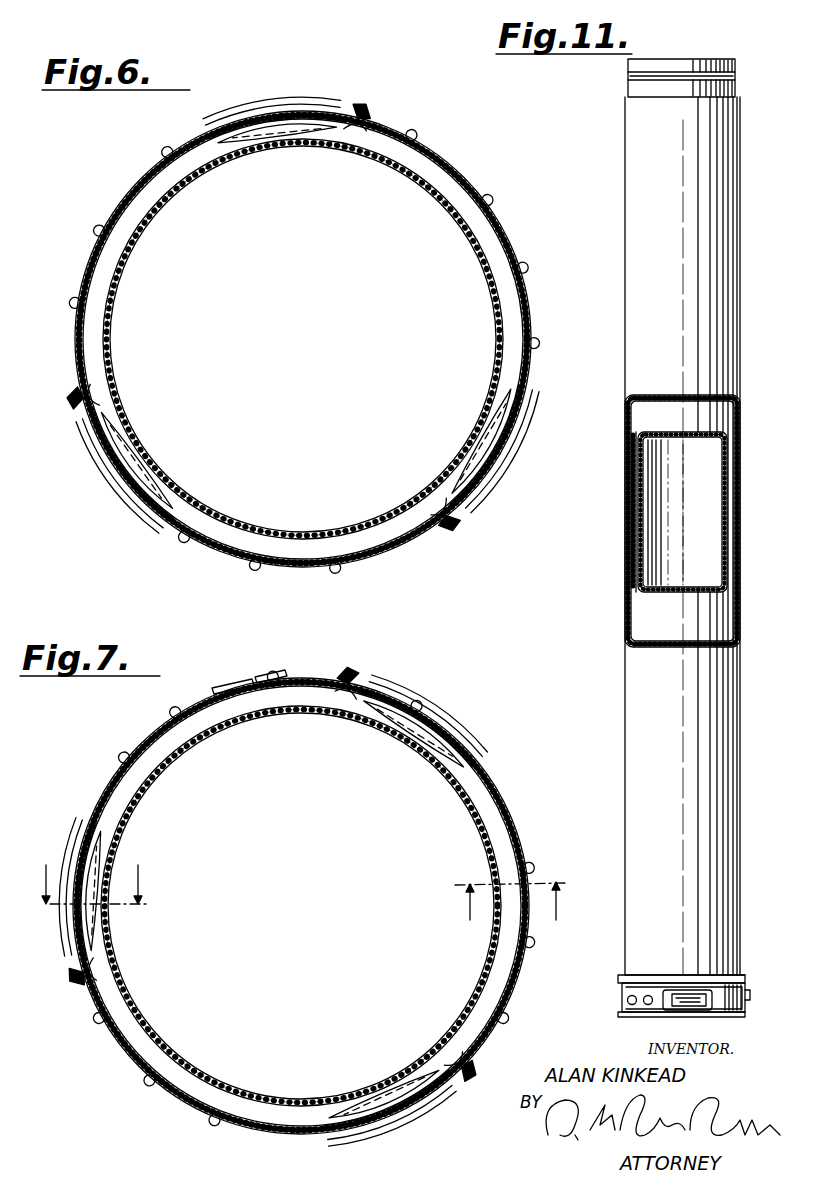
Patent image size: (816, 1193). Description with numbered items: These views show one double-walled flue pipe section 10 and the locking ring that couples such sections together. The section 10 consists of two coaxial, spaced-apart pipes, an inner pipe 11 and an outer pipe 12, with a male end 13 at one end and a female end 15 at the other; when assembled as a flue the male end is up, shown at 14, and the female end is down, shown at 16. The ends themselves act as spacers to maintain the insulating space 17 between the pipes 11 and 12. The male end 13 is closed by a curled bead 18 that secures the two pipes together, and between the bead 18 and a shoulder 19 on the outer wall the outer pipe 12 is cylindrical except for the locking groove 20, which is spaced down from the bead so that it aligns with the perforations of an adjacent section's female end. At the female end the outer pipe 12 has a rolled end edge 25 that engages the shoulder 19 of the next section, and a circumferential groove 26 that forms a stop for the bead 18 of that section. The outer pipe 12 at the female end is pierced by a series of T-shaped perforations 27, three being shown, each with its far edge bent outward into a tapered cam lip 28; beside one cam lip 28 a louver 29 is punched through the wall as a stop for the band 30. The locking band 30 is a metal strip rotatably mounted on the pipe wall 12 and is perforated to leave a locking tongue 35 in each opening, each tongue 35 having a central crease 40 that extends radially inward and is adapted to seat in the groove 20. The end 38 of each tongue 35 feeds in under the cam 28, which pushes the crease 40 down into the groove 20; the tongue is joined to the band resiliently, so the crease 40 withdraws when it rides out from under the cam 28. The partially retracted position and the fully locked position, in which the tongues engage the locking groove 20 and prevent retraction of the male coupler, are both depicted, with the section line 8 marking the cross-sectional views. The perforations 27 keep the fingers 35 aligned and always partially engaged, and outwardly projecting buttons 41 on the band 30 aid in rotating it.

In FIG. 7, the section line 8- 8 is at (90, 884).
In FIG. 7, the double-walled flue pipe section 10 is at (513, 886).
In FIG. 11, the double-walled flue pipe section 10 is at (622, 152).
In FIG. 6, the inner pipe 11 is at (460, 218).
In FIG. 7, the inner pipe 11 is at (145, 782).
In FIG. 11, the inner pipe 11 is at (638, 490).
In FIG. 6, the outer pipe 12 is at (503, 290).
In FIG. 7, the outer pipe 12 is at (108, 800).
In FIG. 11, the outer pipe 12 is at (625, 468).
In FIG. 11, the male end 13 is at (736, 70).
In FIG. 11, the male end (up, as assembled) 14 is at (700, 60).
In FIG. 11, the female end 15 is at (622, 995).
In FIG. 11, the female end (down, as assembled) 16 is at (690, 1016).
In FIG. 6, the insulating space 17 is at (116, 258).
In FIG. 7, the insulating space 17 is at (170, 738).
In FIG. 11, the insulating space 17 is at (633, 540).
In FIG. 11, the curled bead 18 is at (628, 64).
In FIG. 11, the shoulder 19 is at (628, 90).
In FIG. 6, the locking groove 20 is at (515, 315).
In FIG. 7, the locking groove 20 is at (140, 758).
In FIG. 11, the locking groove 20 is at (628, 76).
In FIG. 11, the rolled end edge 25 is at (622, 1014).
In FIG. 11, the circumferential groove 26 is at (740, 978).
In FIG. 6, the T-shaped perforation 27 is at (285, 117).
In FIG. 7, the T-shaped perforation 27 is at (98, 962).
In FIG. 6, the cam lip 28 is at (365, 110).
In FIG. 7, the cam lip 28 is at (362, 682).
In FIG. 11, the cam lip 28 is at (672, 1002).
In FIG. 6, the louver 29 is at (420, 140).
In FIG. 7, the louver 29 is at (420, 712).
In FIG. 6, the locking band 30 is at (194, 142).
In FIG. 7, the locking band 30 is at (174, 716).
In FIG. 11, the locking band 30 is at (750, 995).
In FIG. 6, the locking tongue 35 is at (295, 135).
In FIG. 7, the locking tongue 35 is at (415, 745).
In FIG. 6, the tongue end 38 is at (398, 150).
In FIG. 7, the tongue end 38 is at (450, 755).
In FIG. 6, the central crease 40 is at (322, 130).
In FIG. 7, the central crease 40 is at (430, 760).
In FIG. 6, the button 41 is at (490, 198).
In FIG. 7, the button 41 is at (272, 674).
In FIG. 11, the button 41 is at (648, 995).